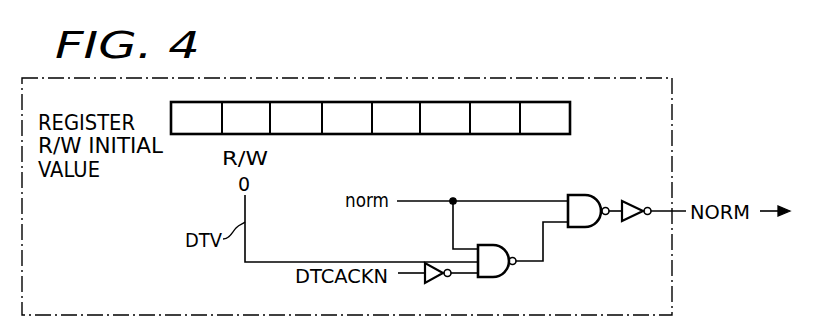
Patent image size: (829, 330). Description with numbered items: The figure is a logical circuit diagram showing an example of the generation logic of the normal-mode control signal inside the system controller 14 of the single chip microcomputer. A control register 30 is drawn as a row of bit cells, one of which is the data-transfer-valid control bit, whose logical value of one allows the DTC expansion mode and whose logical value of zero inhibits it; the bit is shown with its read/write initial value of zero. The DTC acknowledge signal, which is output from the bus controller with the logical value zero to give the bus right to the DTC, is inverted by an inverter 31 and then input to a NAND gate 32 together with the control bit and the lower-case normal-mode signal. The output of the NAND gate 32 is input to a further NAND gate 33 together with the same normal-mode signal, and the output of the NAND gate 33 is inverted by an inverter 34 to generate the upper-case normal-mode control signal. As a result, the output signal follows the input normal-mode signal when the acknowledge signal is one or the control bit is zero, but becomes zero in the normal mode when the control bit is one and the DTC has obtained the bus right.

The system controller 14 is at (672, 114).
The control register 30 is at (572, 117).
The inverter 31 is at (440, 282).
The NAND gate 32 is at (494, 245).
The NAND gate 33 is at (580, 195).
The inverter 34 is at (628, 200).